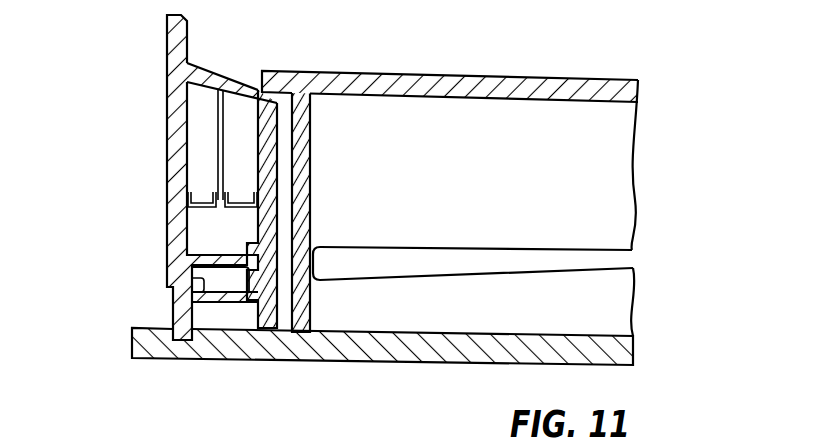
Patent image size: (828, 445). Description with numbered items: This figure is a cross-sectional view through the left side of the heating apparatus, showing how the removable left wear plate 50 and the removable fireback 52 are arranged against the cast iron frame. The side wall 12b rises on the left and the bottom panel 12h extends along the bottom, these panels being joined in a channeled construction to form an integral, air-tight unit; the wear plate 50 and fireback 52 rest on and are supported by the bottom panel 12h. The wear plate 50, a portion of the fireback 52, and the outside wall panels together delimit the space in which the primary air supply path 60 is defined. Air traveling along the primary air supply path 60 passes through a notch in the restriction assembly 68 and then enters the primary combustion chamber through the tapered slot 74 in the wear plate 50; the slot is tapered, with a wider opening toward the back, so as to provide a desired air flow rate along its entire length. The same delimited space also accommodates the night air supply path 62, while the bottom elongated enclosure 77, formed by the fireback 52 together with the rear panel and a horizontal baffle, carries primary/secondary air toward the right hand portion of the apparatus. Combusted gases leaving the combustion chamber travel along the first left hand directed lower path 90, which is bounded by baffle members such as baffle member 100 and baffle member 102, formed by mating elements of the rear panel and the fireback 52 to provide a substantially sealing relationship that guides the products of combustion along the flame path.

The side wall 12b is at (166, 207).
The bottom panel 12h is at (377, 353).
The left wear plate 50 is at (450, 181).
The fireback 52 is at (218, 72).
The primary air supply path 60 is at (520, 316).
The night air supply path 62 is at (203, 273).
The restriction assembly 68 is at (310, 319).
The tapered slot 74 is at (497, 259).
The bottom elongated enclosure 77 is at (228, 318).
The lower path 90 is at (180, 164).
The baffle member 100 is at (250, 172).
The baffle member 102 is at (193, 143).